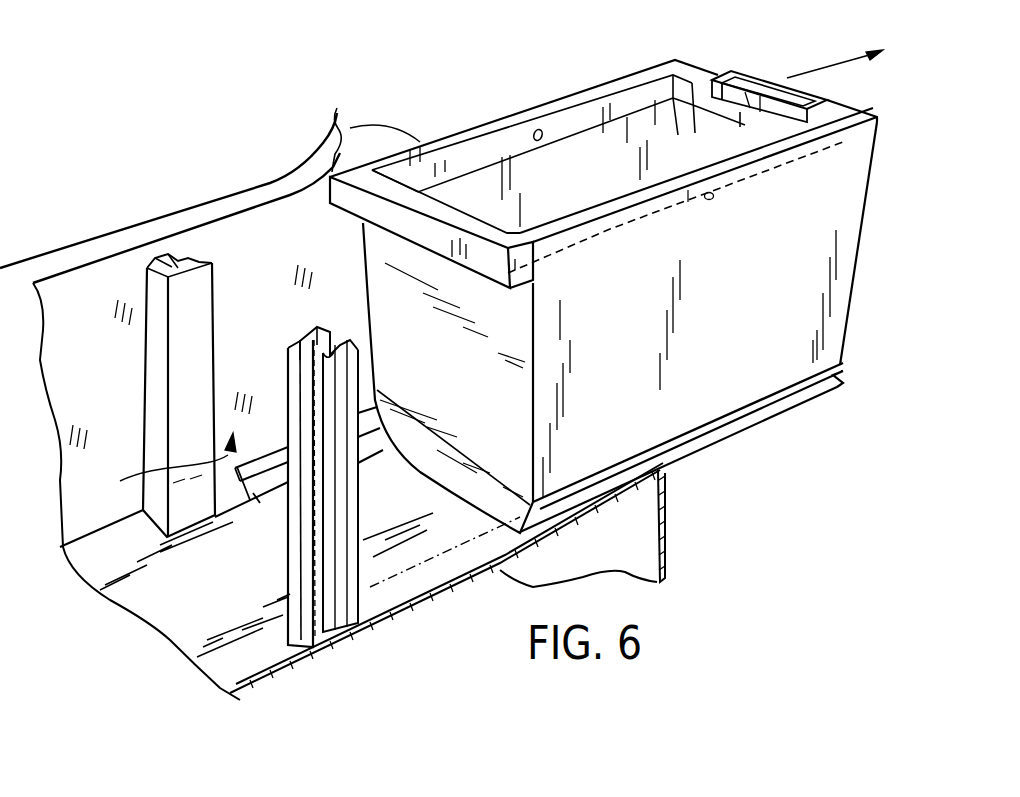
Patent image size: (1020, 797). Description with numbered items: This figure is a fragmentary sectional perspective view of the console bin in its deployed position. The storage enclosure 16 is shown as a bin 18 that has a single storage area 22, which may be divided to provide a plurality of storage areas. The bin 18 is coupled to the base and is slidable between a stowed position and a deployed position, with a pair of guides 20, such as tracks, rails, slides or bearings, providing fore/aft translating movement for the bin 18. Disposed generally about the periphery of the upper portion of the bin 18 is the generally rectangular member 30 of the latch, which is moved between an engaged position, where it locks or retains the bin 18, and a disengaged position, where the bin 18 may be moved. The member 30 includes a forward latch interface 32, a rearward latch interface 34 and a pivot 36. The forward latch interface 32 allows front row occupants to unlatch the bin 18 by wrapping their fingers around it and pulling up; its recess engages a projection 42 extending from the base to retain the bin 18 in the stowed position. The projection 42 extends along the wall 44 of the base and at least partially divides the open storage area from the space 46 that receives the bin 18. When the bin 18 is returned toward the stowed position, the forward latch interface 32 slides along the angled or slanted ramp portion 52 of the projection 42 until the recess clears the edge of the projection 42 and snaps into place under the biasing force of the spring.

The storage enclosure 16 is at (725, 452).
The bin 18 is at (850, 273).
The guides 20 is at (263, 497).
The storage area 22 is at (570, 167).
The member 30 is at (497, 133).
The forward latch interface 32 is at (330, 140).
The rearward latch interface 34 is at (762, 78).
The pivot 36 is at (714, 197).
The projection 42 is at (163, 258).
The wall 44 is at (263, 345).
The space 46 is at (200, 384).
The ramp portion 52 is at (200, 262).